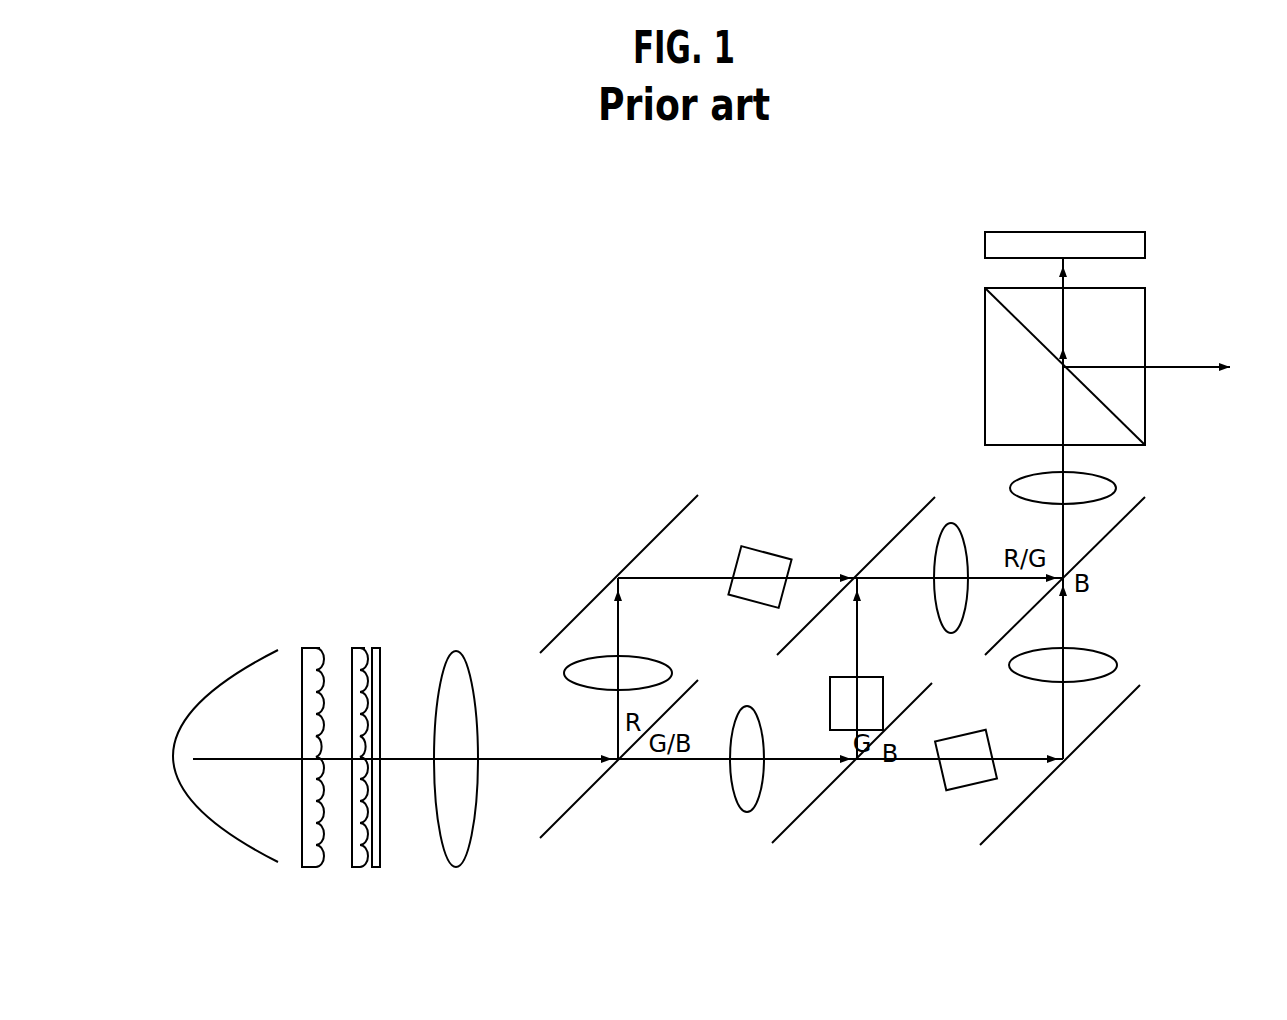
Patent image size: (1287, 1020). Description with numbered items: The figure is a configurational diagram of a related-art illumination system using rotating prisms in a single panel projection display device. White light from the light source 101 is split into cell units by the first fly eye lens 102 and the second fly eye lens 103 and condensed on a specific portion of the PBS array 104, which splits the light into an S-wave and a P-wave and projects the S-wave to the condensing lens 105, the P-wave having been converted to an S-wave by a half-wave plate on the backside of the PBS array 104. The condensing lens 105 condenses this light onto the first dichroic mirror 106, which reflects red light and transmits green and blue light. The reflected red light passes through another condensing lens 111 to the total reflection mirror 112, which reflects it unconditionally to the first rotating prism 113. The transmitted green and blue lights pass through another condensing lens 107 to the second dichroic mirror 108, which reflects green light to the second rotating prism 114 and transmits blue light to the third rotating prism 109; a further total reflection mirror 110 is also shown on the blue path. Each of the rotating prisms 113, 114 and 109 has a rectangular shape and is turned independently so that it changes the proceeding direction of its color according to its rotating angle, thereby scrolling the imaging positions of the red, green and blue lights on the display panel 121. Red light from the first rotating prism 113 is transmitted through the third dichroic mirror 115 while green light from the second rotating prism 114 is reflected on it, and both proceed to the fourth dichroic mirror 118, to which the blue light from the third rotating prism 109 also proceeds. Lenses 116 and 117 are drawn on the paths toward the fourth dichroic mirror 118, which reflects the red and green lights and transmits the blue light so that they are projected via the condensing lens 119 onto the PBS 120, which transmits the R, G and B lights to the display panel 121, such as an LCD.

The light source 101 is at (222, 827).
The first fly eye lens 102 is at (308, 646).
The second fly eye lens 103 is at (361, 646).
The PBS array 104 is at (382, 651).
The condensing lens 105 is at (456, 868).
The first dichroic mirror 106 is at (548, 843).
The condensing lens 107 is at (742, 813).
The second dichroic mirror 108 is at (790, 848).
The third rotating prism 109 is at (946, 793).
The total reflection mirror 110 is at (1000, 848).
The condensing lens 111 is at (567, 687).
The total reflection mirror 112 is at (556, 630).
The first rotating prism 113 is at (765, 545).
The second rotating prism 114 is at (830, 697).
The third dichroic mirror 115 is at (887, 540).
The lens 116 is at (965, 529).
The lens 117 is at (1097, 650).
The fourth dichroic mirror 118 is at (1137, 503).
The condensing lens 119 is at (1118, 480).
The PBS 120 is at (985, 368).
The display panel 121 is at (985, 243).